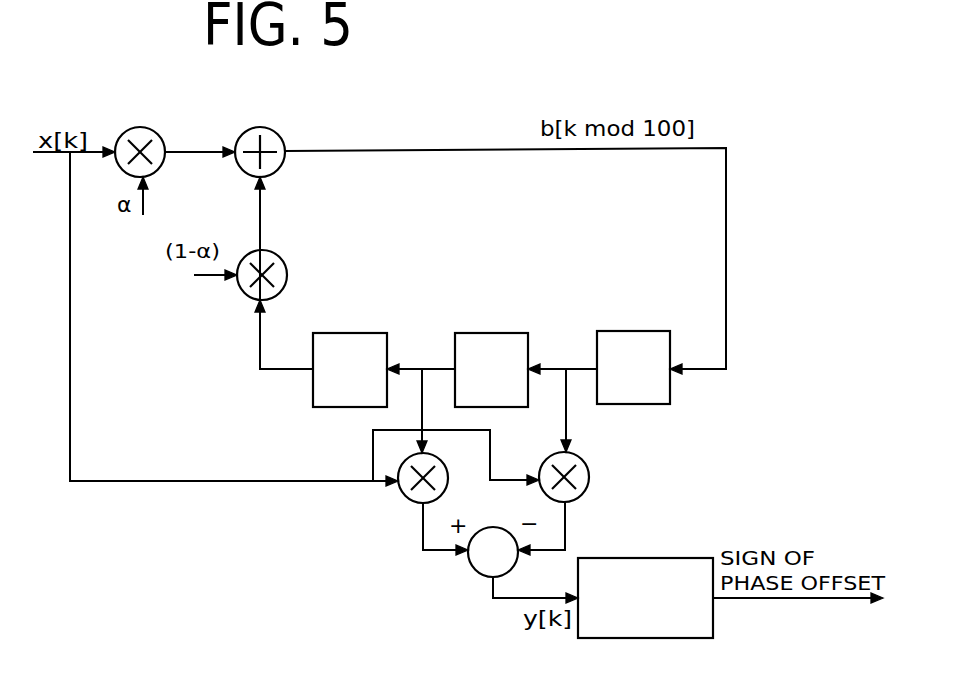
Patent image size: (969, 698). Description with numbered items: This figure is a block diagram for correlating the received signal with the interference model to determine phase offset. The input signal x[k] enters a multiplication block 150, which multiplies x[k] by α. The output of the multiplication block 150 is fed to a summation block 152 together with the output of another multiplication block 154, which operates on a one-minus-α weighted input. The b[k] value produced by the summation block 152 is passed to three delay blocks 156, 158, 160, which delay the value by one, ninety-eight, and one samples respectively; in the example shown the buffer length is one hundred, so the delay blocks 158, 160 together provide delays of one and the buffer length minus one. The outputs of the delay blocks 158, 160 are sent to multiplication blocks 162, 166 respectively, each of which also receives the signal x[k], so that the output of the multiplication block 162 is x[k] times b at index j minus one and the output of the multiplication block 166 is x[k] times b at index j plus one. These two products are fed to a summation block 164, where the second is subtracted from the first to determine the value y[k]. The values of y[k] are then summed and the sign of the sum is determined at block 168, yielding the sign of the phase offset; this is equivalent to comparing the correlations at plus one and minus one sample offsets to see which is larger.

The multiplication block 150 is at (160, 134).
The summation block 152 is at (278, 135).
The multiplication block 154 is at (275, 253).
The delay block 156 is at (353, 333).
The delay block 158 is at (497, 333).
The delay block 160 is at (655, 331).
The multiplication block 162 is at (407, 500).
The summation block 164 is at (473, 565).
The multiplication block 166 is at (588, 472).
The sign determination block 168 is at (677, 638).